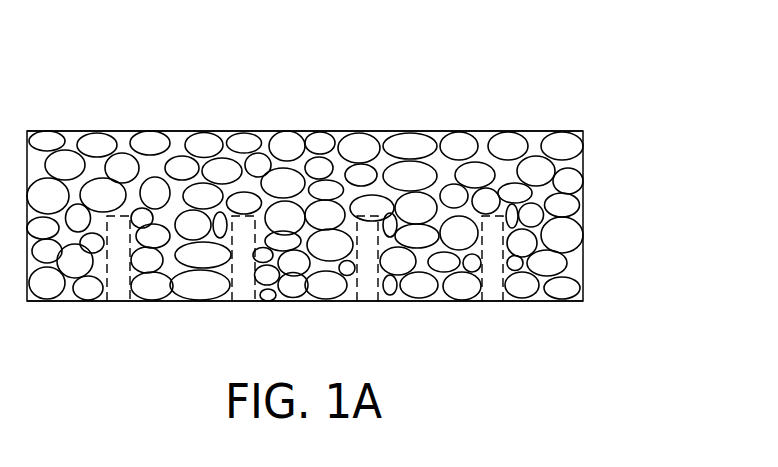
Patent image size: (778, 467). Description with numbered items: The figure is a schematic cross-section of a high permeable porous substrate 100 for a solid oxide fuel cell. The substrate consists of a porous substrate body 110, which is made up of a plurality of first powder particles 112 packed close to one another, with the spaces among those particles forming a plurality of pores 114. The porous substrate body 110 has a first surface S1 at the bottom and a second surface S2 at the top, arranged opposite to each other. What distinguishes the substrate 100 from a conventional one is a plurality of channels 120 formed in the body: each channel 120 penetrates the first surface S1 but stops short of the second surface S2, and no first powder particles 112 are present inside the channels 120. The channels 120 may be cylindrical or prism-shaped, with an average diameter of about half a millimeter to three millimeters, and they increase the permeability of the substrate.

The high permeable porous substrate 100 is at (680, 33).
The porous substrate body 110 is at (583, 198).
The first powder particles 112 is at (558, 145).
The pores 114 is at (152, 167).
The channels 120 is at (375, 264).
The first surface S1 is at (311, 303).
The second surface S2 is at (381, 130).